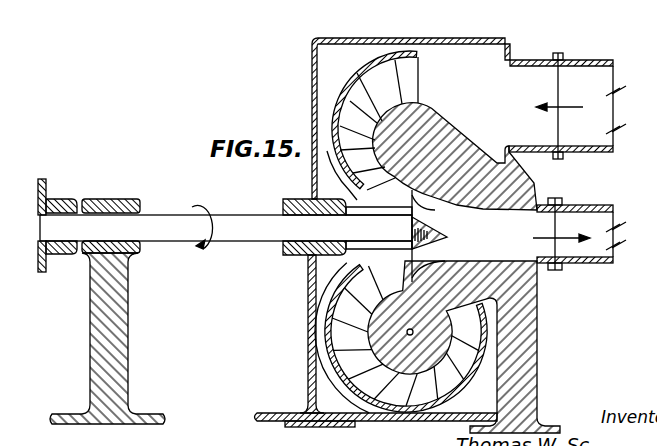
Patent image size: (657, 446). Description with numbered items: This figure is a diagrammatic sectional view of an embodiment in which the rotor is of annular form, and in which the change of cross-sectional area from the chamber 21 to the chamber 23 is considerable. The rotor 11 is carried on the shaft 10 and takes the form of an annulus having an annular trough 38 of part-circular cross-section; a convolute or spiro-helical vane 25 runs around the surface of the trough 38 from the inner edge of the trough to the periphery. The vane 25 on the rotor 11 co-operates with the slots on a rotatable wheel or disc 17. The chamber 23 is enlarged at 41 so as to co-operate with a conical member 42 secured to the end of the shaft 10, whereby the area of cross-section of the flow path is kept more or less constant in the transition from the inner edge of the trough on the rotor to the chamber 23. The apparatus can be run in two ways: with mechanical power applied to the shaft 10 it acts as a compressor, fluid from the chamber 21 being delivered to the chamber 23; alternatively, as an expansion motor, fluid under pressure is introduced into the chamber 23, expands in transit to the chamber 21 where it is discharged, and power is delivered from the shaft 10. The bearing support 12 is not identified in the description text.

The shaft 10 is at (268, 233).
The rotor 11 is at (345, 200).
The bearing support pedestal 12 is at (101, 301).
The rotatable wheel or disc 17 is at (430, 397).
The chamber 21 is at (470, 62).
The chamber 23 is at (513, 227).
The convolute or spiro-helical vane 25 is at (345, 103).
The trough 38 is at (338, 347).
The enlargement of chamber 41 is at (478, 166).
The conical member 42 is at (433, 236).